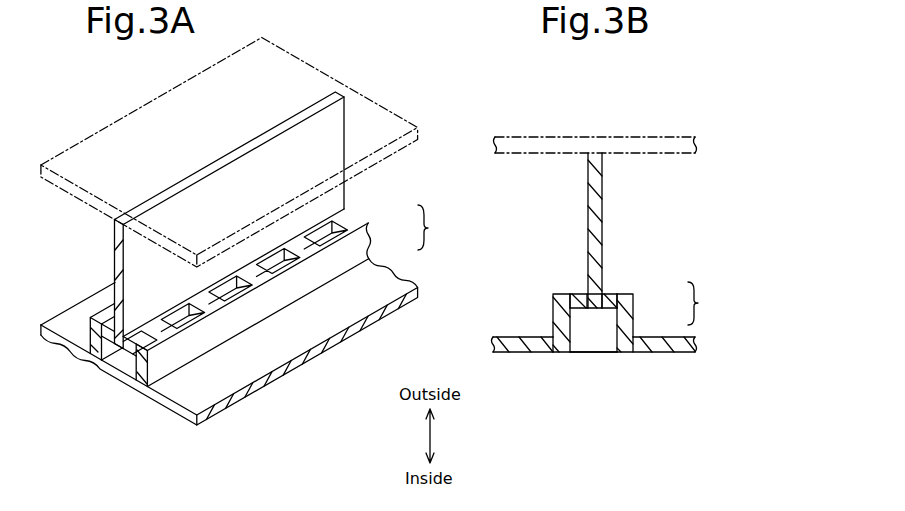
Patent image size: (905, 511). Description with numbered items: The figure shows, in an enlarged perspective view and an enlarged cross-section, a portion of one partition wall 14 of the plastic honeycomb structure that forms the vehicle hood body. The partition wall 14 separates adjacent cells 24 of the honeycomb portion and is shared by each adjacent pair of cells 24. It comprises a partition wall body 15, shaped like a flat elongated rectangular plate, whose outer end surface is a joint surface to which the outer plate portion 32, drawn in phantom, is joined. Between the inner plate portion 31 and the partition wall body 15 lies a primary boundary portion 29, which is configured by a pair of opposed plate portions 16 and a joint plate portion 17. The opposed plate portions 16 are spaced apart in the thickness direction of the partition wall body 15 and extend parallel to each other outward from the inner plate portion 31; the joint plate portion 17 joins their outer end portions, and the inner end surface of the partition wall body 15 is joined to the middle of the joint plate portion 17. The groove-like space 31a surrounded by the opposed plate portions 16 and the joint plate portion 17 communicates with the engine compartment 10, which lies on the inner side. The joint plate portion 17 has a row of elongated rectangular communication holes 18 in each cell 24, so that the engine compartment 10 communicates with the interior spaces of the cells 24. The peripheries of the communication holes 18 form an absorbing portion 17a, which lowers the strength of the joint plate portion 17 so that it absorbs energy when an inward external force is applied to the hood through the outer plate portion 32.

In FIG. 3A, the engine compartment 10 is at (146, 462).
In FIG. 3B, the engine compartment 10 is at (608, 436).
In FIG. 3A, the partition wall 14 is at (350, 327).
In FIG. 3B, the partition wall 14 is at (684, 229).
In FIG. 3A, the partition wall body 15 is at (331, 131).
In FIG. 3B, the partition wall body 15 is at (598, 202).
In FIG. 3A, the opposed plate portion 16 is at (359, 242).
In FIG. 3B, the opposed plate portion 16 is at (570, 333).
In FIG. 3A, the joint plate portion 17 is at (362, 214).
In FIG. 3B, the joint plate portion 17 is at (630, 293).
In FIG. 3A, the absorbing portion 17a is at (300, 246).
In FIG. 3A, the communication hole 18 is at (329, 222).
In FIG. 3B, the communication hole 18 is at (580, 293).
In FIG. 3A, the cell 24 is at (78, 239).
In FIG. 3B, the cell 24 is at (558, 189).
In FIG. 3A, the primary boundary portion 29 is at (439, 227).
In FIG. 3B, the primary boundary portion 29 is at (709, 303).
In FIG. 3A, the inner plate portion 31 is at (78, 313).
In FIG. 3B, the inner plate portion 31 is at (668, 347).
In FIG. 3A, the groove-like space 31a is at (133, 380).
In FIG. 3B, the groove-like space 31a is at (612, 350).
In FIG. 3A, the outer plate portion 32 is at (323, 74).
In FIG. 3B, the outer plate portion 32 is at (648, 137).